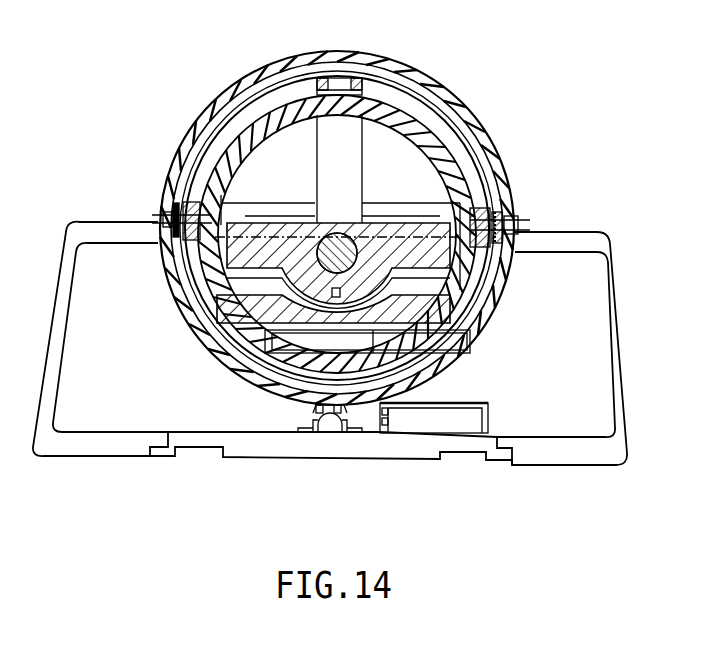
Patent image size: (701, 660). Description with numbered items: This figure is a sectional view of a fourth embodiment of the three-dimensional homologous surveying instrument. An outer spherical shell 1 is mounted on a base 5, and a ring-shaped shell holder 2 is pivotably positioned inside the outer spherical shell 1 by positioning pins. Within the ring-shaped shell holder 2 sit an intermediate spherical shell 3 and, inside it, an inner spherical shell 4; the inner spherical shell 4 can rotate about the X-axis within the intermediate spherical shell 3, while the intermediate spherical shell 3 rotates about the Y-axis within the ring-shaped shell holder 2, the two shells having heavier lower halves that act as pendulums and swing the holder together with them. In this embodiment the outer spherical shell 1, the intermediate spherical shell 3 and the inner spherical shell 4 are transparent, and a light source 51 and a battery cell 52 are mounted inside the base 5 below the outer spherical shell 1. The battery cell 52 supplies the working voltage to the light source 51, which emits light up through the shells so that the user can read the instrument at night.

The outer spherical shell 1 is at (420, 78).
The ring-shaped shell holder 2 is at (497, 212).
The intermediate spherical shell 3 is at (378, 78).
The inner spherical shell 4 is at (440, 152).
The base 5 is at (567, 236).
The light source 51 is at (316, 411).
The battery cell 52 is at (418, 424).